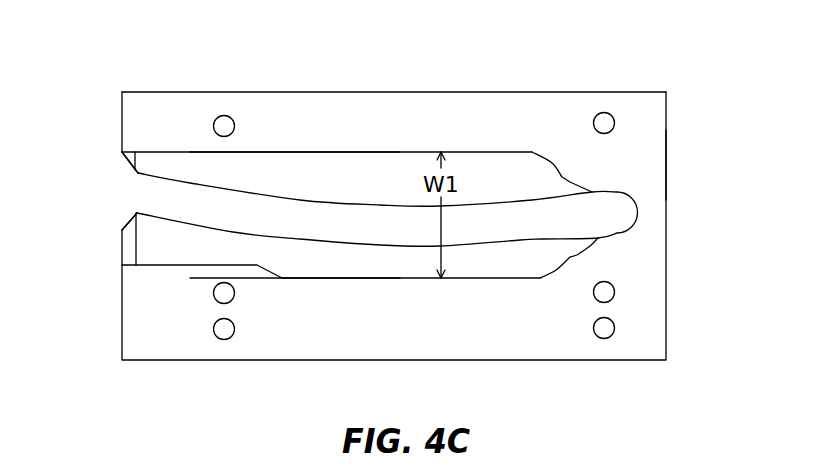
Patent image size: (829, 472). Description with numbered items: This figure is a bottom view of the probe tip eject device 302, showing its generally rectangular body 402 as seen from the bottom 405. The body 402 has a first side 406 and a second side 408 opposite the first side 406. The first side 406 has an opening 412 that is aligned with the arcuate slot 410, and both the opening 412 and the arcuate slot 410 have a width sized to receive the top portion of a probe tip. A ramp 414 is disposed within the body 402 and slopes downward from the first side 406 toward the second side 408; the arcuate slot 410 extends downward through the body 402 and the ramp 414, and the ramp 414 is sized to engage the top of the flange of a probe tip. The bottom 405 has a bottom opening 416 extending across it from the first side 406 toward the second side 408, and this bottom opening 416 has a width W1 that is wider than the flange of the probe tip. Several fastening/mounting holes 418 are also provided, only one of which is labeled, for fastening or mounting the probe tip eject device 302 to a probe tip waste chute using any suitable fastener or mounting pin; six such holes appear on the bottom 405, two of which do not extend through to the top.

The probe tip eject device 302 is at (203, 68).
The body 402 is at (647, 92).
The bottom 405 is at (435, 122).
The first side 406 is at (122, 305).
The second side 408 is at (667, 138).
The arcuate slot 410 is at (322, 197).
The opening 412 is at (118, 193).
The ramp 414 is at (268, 168).
The bottom opening 416 is at (478, 152).
The fastening/mounting holes 418 is at (593, 326).